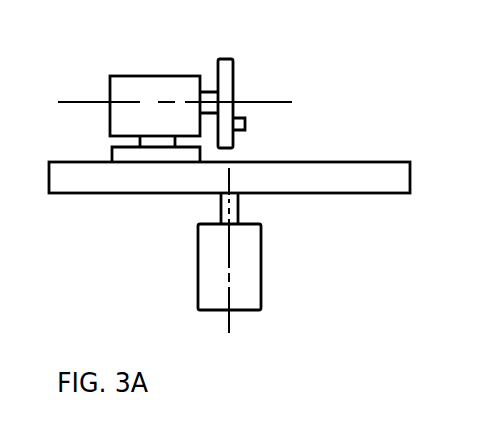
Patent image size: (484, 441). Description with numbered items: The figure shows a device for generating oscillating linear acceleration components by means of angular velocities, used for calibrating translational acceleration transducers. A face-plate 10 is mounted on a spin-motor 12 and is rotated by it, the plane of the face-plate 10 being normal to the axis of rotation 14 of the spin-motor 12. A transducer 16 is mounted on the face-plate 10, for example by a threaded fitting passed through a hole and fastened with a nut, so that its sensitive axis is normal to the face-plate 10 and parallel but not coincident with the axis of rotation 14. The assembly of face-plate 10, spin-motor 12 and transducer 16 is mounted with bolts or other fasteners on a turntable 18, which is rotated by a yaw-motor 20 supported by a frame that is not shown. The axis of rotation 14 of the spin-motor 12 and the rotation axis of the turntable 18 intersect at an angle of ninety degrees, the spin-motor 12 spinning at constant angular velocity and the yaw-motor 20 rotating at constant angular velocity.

The face-plate 10 is at (233, 63).
The spin-motor 12 is at (157, 76).
The axis of rotation 14 is at (68, 102).
The transducer 16 is at (245, 124).
The turntable 18 is at (68, 161).
The yaw-motor 20 is at (264, 260).